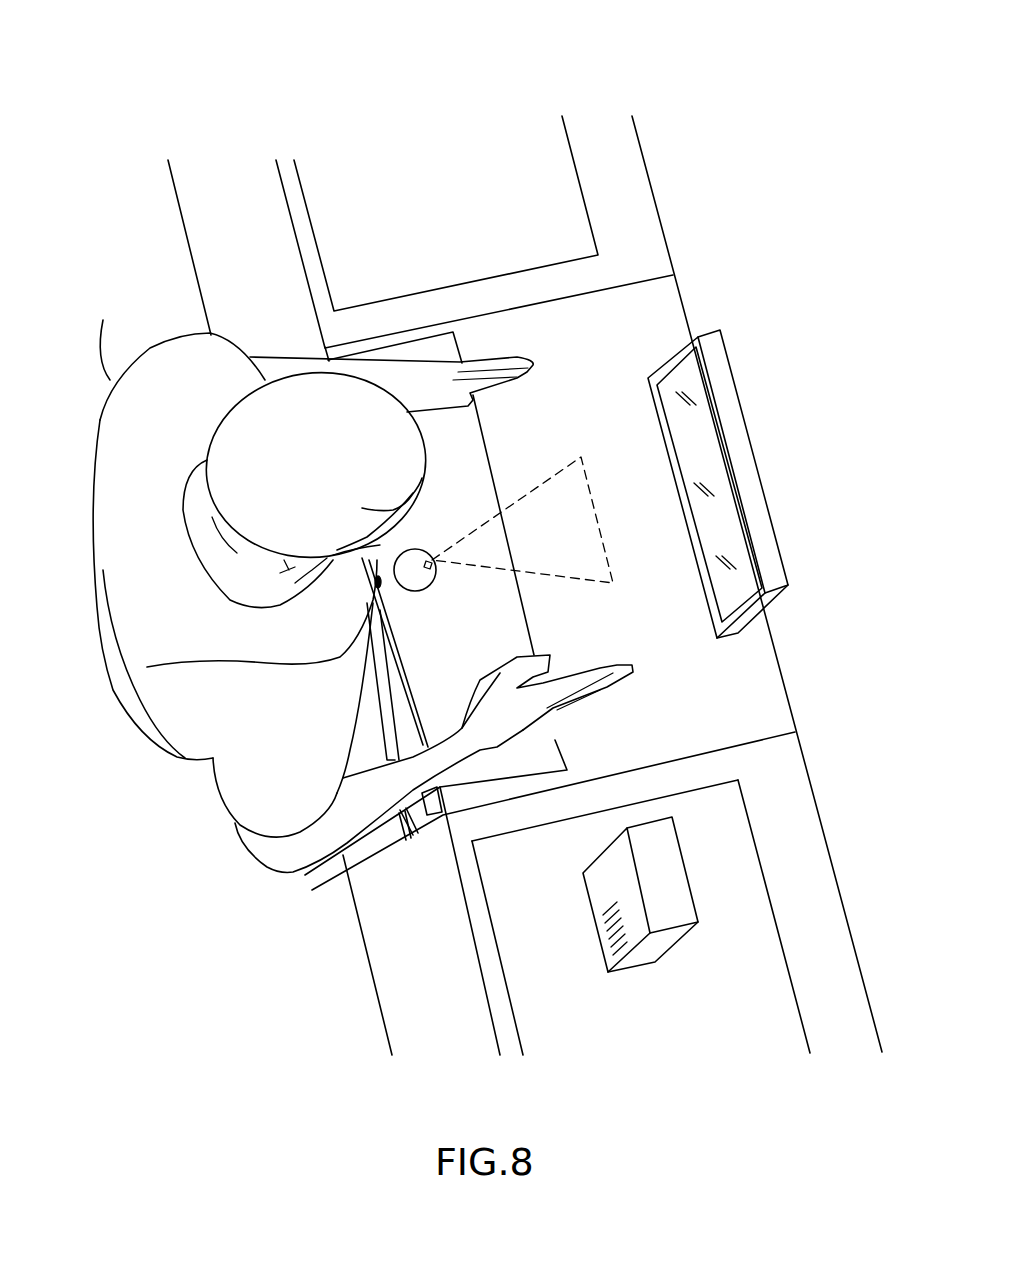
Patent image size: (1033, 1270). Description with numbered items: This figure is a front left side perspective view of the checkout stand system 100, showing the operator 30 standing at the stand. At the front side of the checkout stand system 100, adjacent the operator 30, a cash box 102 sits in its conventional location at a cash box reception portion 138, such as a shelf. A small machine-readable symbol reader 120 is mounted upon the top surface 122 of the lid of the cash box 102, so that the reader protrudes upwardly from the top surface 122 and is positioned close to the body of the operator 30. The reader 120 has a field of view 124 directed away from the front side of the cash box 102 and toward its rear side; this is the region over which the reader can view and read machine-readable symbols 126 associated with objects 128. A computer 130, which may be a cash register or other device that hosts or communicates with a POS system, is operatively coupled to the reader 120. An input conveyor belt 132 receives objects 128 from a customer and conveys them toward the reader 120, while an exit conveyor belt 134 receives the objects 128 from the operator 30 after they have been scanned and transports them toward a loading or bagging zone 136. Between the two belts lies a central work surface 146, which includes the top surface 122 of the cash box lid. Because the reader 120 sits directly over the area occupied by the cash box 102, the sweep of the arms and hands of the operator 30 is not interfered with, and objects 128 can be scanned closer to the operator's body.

The checkout stand system 100 is at (712, 106).
The cash box 102 is at (377, 340).
The operator 30 is at (115, 377).
The loading or bagging zone 136 is at (374, 117).
The exit conveyor belt 134 is at (555, 208).
The field of view 124 is at (548, 465).
The computer 130 is at (740, 398).
The central work surface 146 is at (548, 622).
The machine-readable symbol reader 120 is at (412, 578).
The top surface 122 is at (438, 657).
The cash box reception portion 138 is at (497, 823).
The machine-readable symbols 126 is at (455, 880).
The objects 128 is at (662, 853).
The input conveyor belt 132 is at (747, 955).